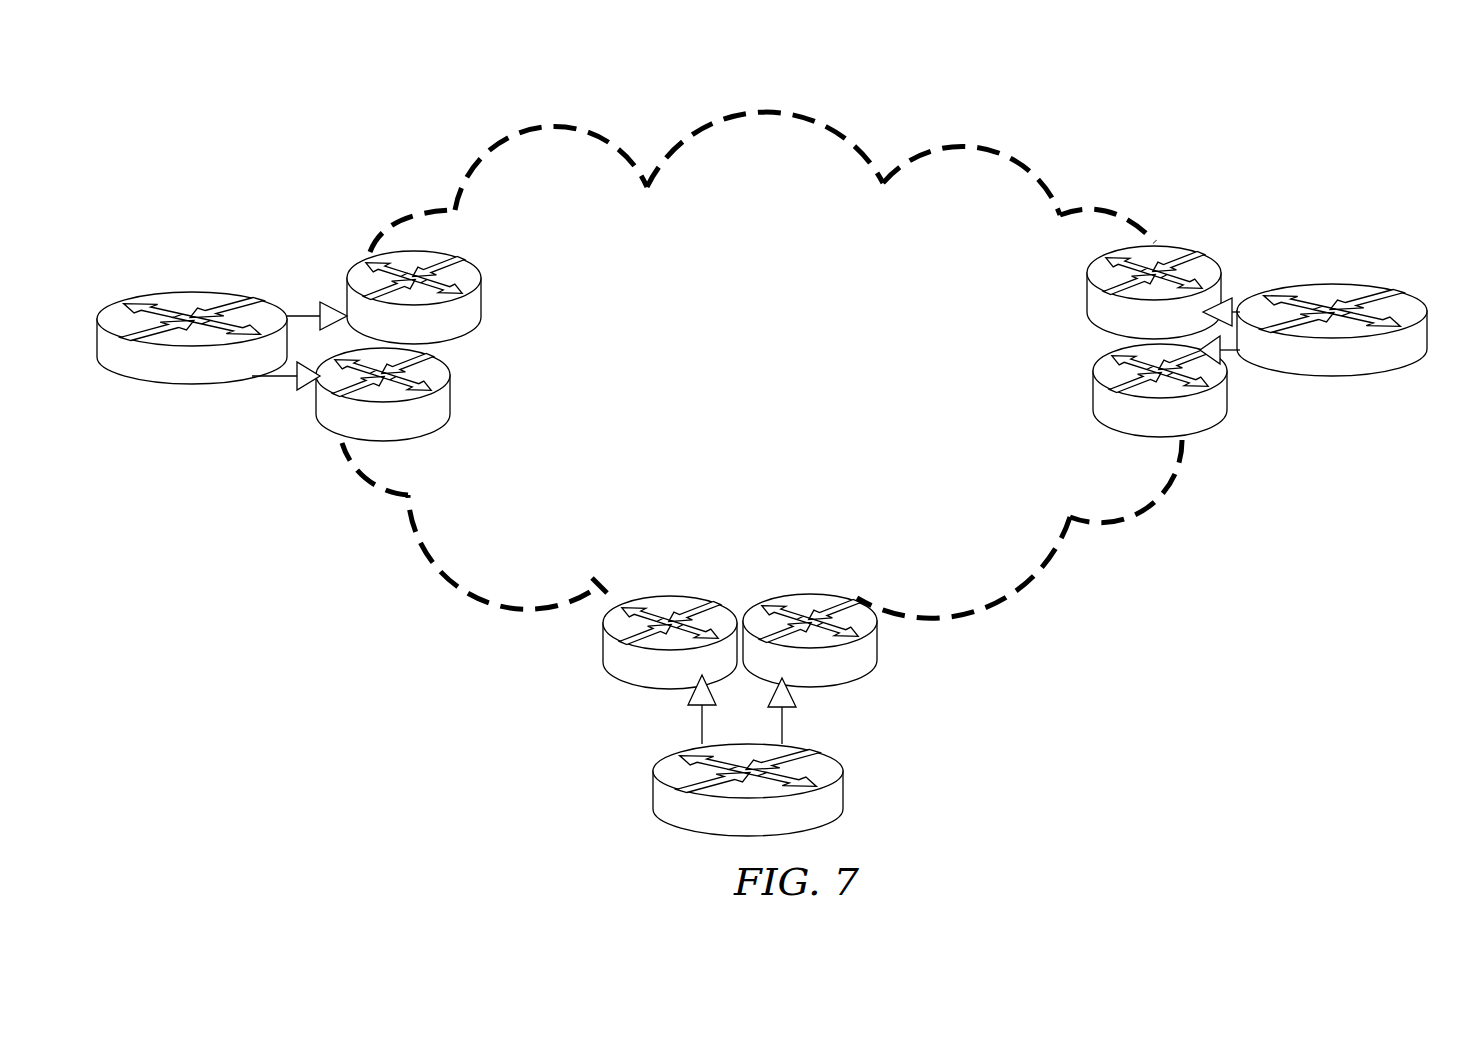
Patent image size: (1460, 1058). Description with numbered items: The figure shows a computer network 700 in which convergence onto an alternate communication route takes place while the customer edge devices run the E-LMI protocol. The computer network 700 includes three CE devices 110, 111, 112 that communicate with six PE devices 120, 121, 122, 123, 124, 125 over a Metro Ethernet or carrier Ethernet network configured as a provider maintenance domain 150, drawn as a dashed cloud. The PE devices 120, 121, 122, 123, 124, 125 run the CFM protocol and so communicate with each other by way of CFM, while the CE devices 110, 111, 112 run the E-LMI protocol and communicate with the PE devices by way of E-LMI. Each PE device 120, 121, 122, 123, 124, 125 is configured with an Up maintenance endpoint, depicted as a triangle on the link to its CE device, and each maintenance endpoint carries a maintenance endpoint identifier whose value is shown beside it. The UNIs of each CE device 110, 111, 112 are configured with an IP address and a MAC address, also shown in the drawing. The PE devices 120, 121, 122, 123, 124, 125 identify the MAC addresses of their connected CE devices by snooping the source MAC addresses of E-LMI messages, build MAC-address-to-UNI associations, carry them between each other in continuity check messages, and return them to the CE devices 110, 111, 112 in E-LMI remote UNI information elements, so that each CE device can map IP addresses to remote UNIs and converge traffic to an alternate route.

The computer network 700 is at (1138, 75).
The provider maintenance domain 150 is at (1027, 261).
The CE device 110 is at (192, 340).
The CE device 111 is at (747, 786).
The CE device 112 is at (1332, 335).
The PE device 120 is at (375, 272).
The PE device 121 is at (350, 416).
The PE device 122 is at (604, 653).
The PE device 123 is at (876, 648).
The PE device 124 is at (1183, 422).
The PE device 125 is at (1173, 269).